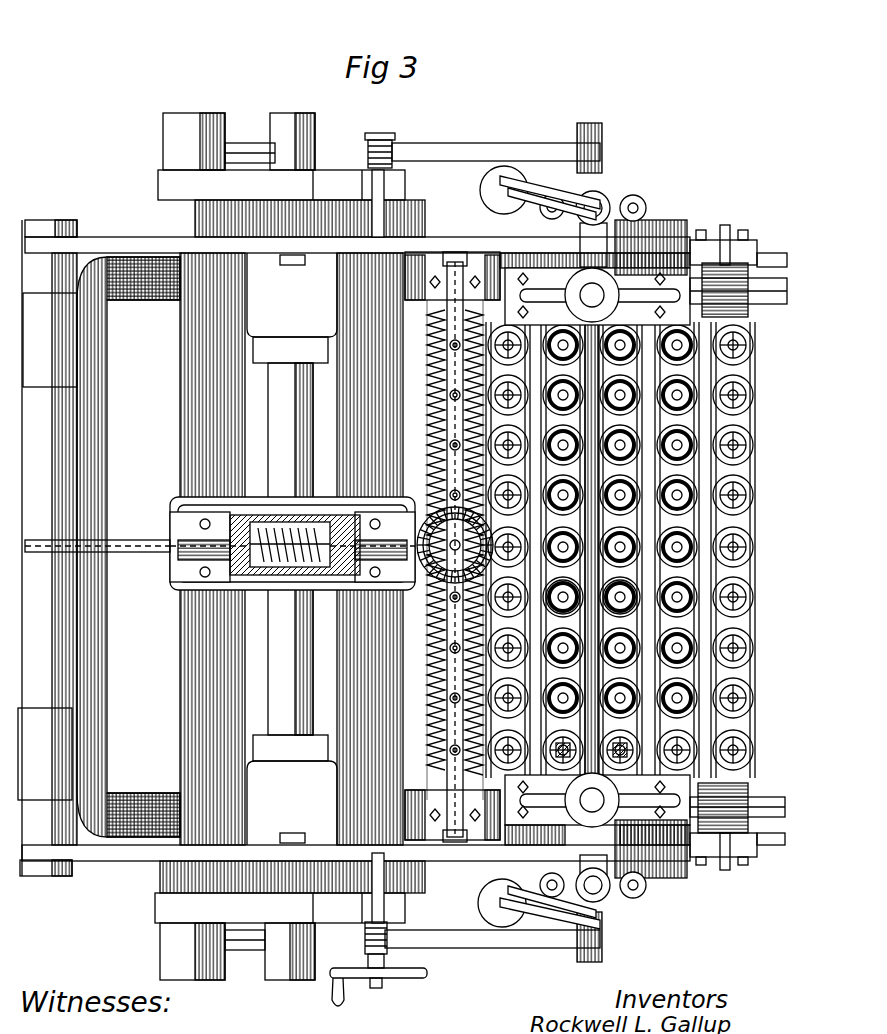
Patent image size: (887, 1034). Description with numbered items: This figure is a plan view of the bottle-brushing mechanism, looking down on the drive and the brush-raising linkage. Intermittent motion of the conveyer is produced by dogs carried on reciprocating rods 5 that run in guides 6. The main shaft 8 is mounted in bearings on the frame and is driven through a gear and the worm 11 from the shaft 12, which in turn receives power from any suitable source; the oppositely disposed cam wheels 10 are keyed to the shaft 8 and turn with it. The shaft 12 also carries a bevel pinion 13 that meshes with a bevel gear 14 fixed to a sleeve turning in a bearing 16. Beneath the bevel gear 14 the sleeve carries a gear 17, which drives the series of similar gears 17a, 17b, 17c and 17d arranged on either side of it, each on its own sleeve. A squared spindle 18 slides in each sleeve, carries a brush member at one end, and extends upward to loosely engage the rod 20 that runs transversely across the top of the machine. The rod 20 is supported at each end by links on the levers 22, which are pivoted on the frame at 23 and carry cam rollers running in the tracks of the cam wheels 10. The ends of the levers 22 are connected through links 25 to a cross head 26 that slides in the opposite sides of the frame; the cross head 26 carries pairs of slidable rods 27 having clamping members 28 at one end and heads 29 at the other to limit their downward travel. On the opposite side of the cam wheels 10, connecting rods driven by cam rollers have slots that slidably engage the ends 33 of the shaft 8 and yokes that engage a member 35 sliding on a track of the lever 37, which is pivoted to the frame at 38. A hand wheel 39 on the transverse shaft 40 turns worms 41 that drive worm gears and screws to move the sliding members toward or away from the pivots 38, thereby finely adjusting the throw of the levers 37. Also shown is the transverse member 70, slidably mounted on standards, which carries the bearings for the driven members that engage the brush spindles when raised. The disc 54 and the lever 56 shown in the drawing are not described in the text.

The reciprocating rods 5 is at (778, 306).
The guides 6 is at (740, 306).
The shaft 8 is at (272, 690).
The cam wheels 10 is at (236, 190).
The worm 11 is at (305, 522).
The shaft 12 is at (135, 540).
The bevel pinion 13 is at (292, 543).
The bevel gear 14 is at (425, 520).
The bearing 16 is at (430, 680).
The gear 17 is at (512, 580).
The gear 17a is at (438, 490).
The gear 17b is at (440, 440).
The gear 17c is at (440, 395).
The gear 17d is at (440, 338).
The squared spindle 18 is at (450, 345).
The rod 20 is at (447, 352).
The levers 22 is at (130, 237).
The pivot 23 is at (46, 220).
The links 25 is at (640, 890).
The cross head 26 is at (588, 550).
The rods 27 is at (612, 750).
The clamping members 28 is at (612, 600).
The heads 29 is at (612, 350).
The ends of the shaft 33 is at (315, 128).
The member 35 is at (250, 143).
The lever 37 is at (466, 148).
The pivot 38 is at (196, 113).
The hand wheel 39 is at (410, 978).
The shaft 40 is at (384, 186).
The worms 41 is at (392, 150).
The disc 54 is at (482, 186).
The lever 56 is at (525, 178).
The member 70 is at (620, 900).